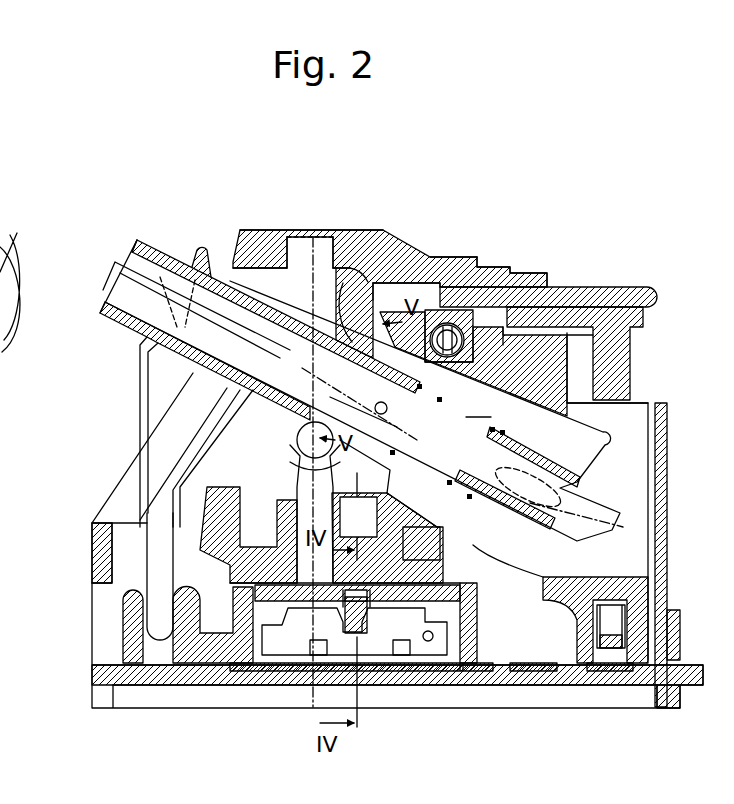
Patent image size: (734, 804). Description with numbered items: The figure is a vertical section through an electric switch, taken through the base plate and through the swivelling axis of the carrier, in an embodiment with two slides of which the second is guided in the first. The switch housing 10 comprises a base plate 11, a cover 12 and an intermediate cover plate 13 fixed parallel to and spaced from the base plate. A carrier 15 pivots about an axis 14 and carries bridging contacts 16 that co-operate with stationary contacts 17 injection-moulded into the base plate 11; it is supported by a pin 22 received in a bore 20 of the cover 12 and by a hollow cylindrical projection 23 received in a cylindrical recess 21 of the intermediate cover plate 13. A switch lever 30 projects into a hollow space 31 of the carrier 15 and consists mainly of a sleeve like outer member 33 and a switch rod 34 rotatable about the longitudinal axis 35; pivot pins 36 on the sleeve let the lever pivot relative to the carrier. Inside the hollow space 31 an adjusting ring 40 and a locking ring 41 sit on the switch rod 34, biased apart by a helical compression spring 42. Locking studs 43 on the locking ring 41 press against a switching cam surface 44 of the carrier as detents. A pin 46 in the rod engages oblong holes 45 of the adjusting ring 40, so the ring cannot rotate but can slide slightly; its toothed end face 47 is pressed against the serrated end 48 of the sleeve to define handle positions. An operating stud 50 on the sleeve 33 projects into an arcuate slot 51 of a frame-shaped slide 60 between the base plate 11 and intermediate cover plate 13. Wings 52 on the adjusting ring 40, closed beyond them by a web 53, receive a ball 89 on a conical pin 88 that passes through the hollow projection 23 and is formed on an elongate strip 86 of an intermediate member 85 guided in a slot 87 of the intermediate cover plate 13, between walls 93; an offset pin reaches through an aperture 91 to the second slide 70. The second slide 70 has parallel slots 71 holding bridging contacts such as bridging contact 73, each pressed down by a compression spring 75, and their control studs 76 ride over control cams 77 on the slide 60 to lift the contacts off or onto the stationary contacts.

The switch housing 10 is at (566, 240).
The base plate 11 is at (550, 675).
The cover 12 is at (432, 258).
The intermediate cover plate 13 is at (550, 558).
The axis 14 is at (311, 237).
The carrier 15 is at (392, 320).
The bridging contacts 16 is at (627, 650).
The stationary contacts 17 is at (613, 672).
The bore 20 is at (330, 262).
The cylindrical recess 21 is at (403, 520).
The pin 22 is at (290, 238).
The hollow cylindrical projection 23 is at (372, 540).
The switch lever 30 is at (180, 235).
The hollow space 31 is at (364, 411).
The sleeve like outer member 33 is at (150, 247).
The switch rod 34 is at (137, 277).
The longitudinal axis 35 is at (215, 270).
The pivot pins 36 is at (12, 268).
The adjusting ring 40 is at (458, 258).
The locking ring 41 is at (580, 475).
The helical compression spring 42 is at (512, 427).
The locking studs 43 is at (503, 478).
The switching cam surface 44 is at (609, 433).
The oblong holes 45 is at (292, 421).
The pin 46 is at (406, 393).
The end face 47 is at (355, 355).
The serrated end 48 is at (422, 263).
The operating stud 50 is at (157, 557).
The arcuate slot 51 is at (147, 655).
The wings 52 is at (248, 437).
The web 53 is at (332, 463).
The slide 60 is at (207, 647).
The second slide 70 is at (473, 590).
The slots 71 is at (473, 600).
The bridging contact 73 is at (473, 627).
The compression spring 75 is at (362, 645).
The control studs 76 is at (231, 657).
The control cams 77 is at (258, 683).
The intermediate member 85 is at (290, 500).
The elongate strip 86 is at (200, 540).
The slot 87 is at (200, 570).
The conical pin 88 is at (232, 468).
The ball 89 is at (250, 462).
The aperture 91 is at (299, 648).
The walls 93 is at (437, 550).